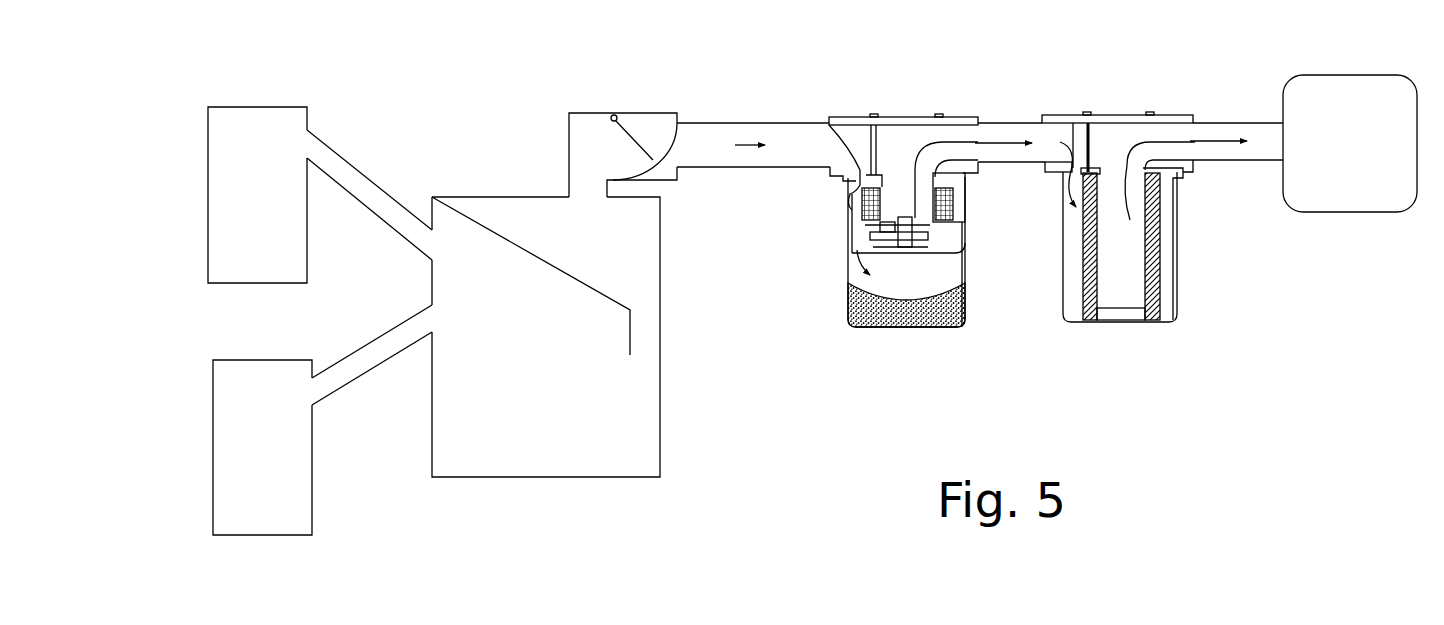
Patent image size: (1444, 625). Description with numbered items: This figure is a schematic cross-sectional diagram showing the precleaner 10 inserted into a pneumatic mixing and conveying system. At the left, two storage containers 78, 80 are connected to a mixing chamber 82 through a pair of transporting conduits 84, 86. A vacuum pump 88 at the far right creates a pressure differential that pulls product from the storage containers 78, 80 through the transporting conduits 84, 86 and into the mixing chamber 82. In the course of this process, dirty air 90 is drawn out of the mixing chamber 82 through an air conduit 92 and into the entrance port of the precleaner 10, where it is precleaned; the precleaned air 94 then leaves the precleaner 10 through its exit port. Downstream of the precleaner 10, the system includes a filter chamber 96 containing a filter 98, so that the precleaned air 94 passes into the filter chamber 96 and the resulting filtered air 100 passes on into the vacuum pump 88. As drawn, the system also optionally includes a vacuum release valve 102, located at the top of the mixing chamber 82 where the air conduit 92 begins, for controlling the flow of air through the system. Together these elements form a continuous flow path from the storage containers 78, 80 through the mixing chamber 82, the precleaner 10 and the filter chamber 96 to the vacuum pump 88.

The precleaner 10 is at (855, 230).
The storage container 78 is at (227, 123).
The storage container 80 is at (268, 528).
The mixing chamber 82 is at (556, 462).
The transporting conduit 84 is at (348, 160).
The transporting conduit 86 is at (358, 368).
The vacuum pump 88 is at (1342, 188).
The dirty air 90 is at (855, 157).
The air conduit 92 is at (777, 157).
The precleaned air 94 is at (1052, 142).
The filter chamber 96 is at (1070, 237).
The filter 98 is at (1097, 322).
The filtered air 100 is at (1202, 153).
The vacuum release valve 102 is at (602, 147).